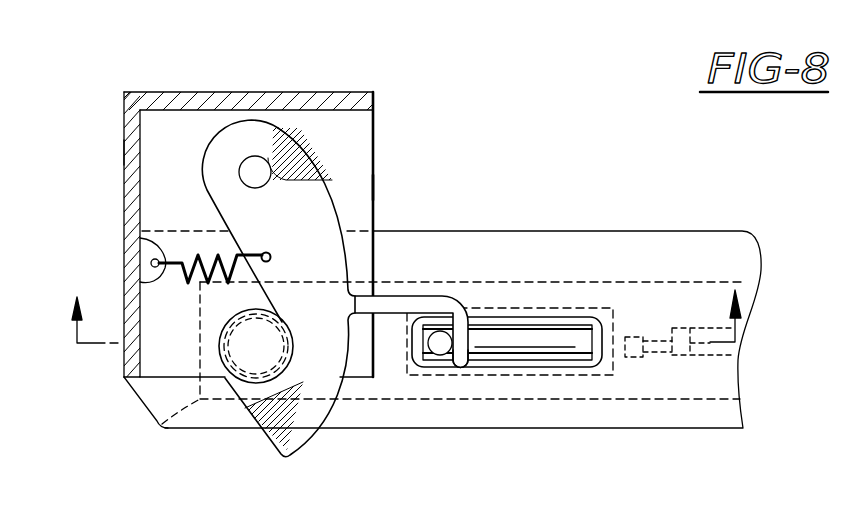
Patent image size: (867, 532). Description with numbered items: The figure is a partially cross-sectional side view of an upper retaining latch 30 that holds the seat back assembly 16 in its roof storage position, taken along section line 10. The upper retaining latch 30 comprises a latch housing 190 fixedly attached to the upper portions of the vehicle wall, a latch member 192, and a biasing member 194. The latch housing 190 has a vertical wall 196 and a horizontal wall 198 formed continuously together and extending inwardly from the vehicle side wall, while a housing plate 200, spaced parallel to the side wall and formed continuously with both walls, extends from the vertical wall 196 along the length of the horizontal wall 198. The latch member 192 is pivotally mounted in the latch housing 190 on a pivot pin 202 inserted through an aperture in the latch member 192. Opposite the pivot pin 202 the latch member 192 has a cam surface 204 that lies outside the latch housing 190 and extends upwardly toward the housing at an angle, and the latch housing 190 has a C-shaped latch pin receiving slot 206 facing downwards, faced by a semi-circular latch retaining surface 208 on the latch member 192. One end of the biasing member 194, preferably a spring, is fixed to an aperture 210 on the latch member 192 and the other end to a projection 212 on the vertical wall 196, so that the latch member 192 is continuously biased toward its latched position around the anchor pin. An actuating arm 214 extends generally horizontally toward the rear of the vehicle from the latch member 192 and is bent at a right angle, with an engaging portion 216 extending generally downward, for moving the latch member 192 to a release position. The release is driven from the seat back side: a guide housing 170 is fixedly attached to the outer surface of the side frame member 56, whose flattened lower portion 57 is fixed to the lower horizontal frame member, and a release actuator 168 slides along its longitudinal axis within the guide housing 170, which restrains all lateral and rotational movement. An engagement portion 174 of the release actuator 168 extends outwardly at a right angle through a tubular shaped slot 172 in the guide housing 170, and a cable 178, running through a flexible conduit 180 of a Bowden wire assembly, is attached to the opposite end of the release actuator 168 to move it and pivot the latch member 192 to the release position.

The section line 10- 10 is at (405, 290).
The seat back assembly 16 is at (642, 206).
The upper retaining latch 30 is at (394, 105).
The side frame member 56 is at (695, 281).
The lower portion 57 is at (356, 400).
The release actuator 168 is at (547, 318).
The guide housing 170 is at (612, 377).
The slot 172 is at (561, 360).
The engagement portion 174 is at (440, 356).
The cable 178 is at (655, 350).
The flexible conduit 180 is at (712, 356).
The latch housing 190 is at (130, 92).
The latch member 192 is at (330, 177).
The biasing member 194 is at (186, 278).
The vertical wall 196 is at (124, 152).
The horizontal wall 198 is at (217, 92).
The housing plate 200 is at (376, 188).
The pivot pin 202 is at (266, 158).
The cam surface 204 is at (244, 415).
The latch pin receiving slot 206 is at (278, 310).
The latch retaining surface 208 is at (162, 424).
The aperture 210 is at (267, 253).
The projection 212 is at (148, 240).
The actuating arm 214 is at (443, 295).
The engaging portion 216 is at (463, 370).